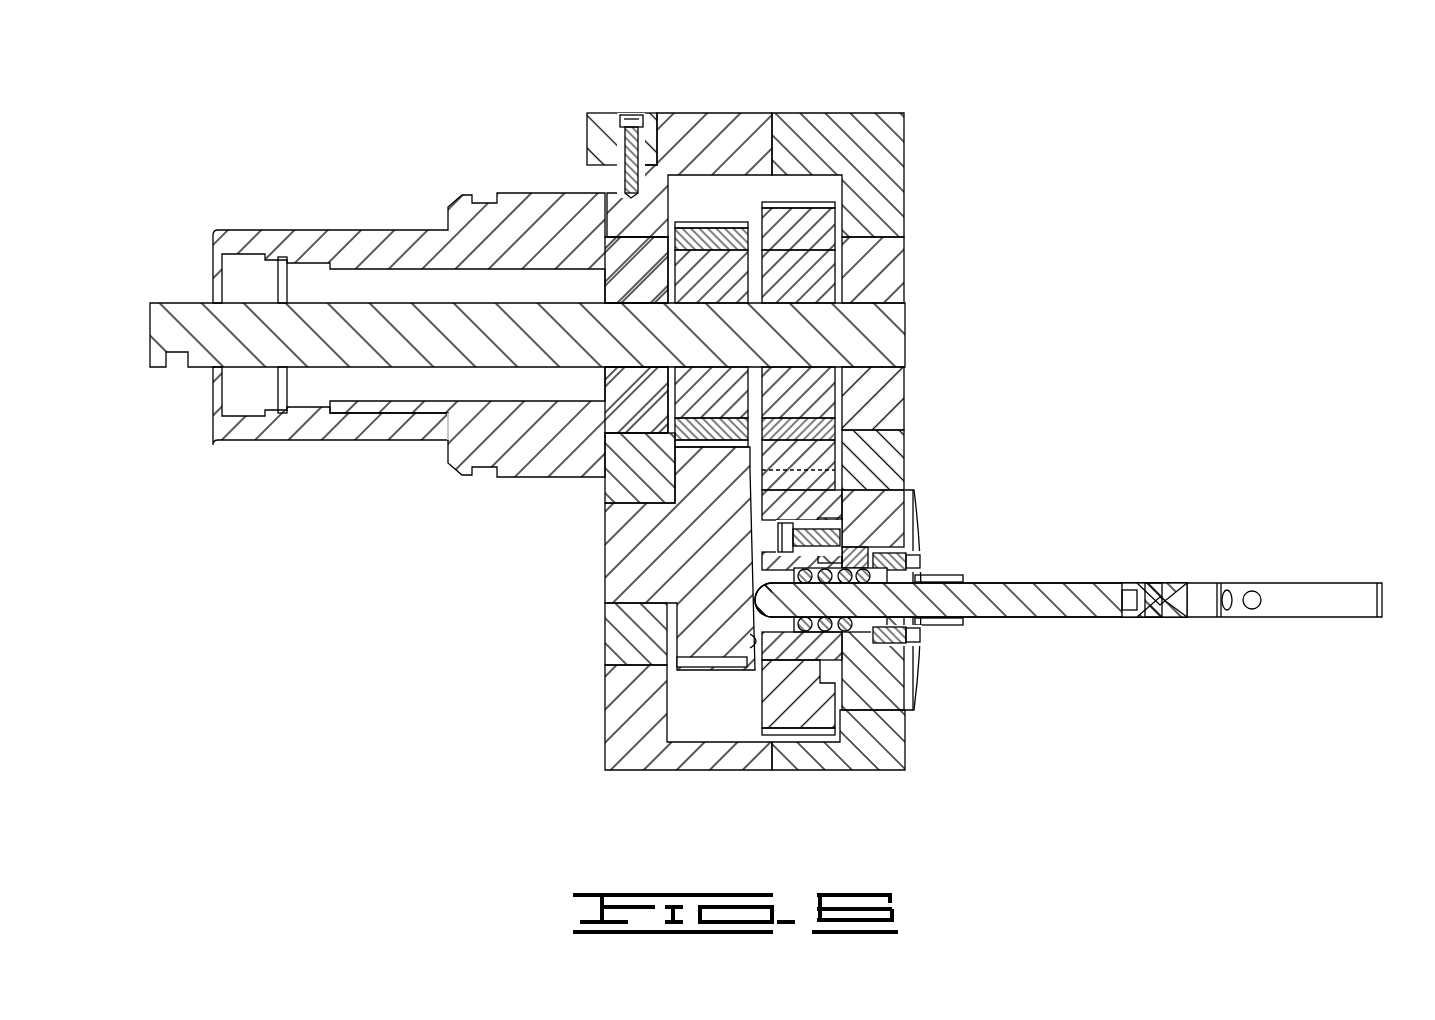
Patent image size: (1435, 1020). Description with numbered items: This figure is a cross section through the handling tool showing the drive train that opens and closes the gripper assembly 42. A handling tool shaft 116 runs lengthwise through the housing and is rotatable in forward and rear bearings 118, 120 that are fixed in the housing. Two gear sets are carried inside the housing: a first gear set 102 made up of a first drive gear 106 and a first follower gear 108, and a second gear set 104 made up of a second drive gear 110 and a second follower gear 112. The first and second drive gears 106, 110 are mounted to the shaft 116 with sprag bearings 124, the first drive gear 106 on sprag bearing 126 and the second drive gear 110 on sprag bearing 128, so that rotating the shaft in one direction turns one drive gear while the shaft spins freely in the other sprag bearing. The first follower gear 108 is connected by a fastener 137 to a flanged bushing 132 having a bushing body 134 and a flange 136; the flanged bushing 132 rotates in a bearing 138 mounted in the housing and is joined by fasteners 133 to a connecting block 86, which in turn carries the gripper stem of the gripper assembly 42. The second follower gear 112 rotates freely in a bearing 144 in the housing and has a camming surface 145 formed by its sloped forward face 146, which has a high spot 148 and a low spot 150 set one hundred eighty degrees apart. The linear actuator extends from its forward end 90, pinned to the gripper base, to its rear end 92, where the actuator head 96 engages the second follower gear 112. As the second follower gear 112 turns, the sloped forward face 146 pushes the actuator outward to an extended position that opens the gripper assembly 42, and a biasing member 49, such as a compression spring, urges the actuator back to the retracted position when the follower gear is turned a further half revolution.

The gripper assembly 42 is at (1312, 618).
The biasing member 49 is at (915, 560).
The connecting block 86 is at (915, 622).
The forward end 90 is at (1175, 590).
The rear end 92 is at (630, 594).
The actuator head 96 is at (752, 600).
The first gear set 102 is at (856, 251).
The second gear set 104 is at (644, 252).
The first drive gear 106 is at (788, 218).
The first follower gear 108 is at (793, 718).
The second drive gear 110 is at (695, 237).
The second follower gear 112 is at (710, 650).
The handling tool shaft 116 is at (195, 318).
The forward bearing 118 is at (898, 388).
The rear bearing 120 is at (625, 245).
The sprag bearings 124 is at (934, 370).
The sprag bearing 126 is at (822, 288).
The sprag bearing 128 is at (717, 263).
The flanged bushing 132 is at (936, 693).
The fasteners 133 is at (880, 637).
The bushing body 134 is at (866, 650).
The flange 136 is at (843, 735).
The fastener 137 is at (747, 600).
The bearing 138 is at (890, 522).
The bearing 144 is at (605, 478).
The camming surface 145 is at (932, 518).
The forward face 146 is at (765, 520).
The high spot 148 is at (790, 530).
The low spot 150 is at (745, 639).